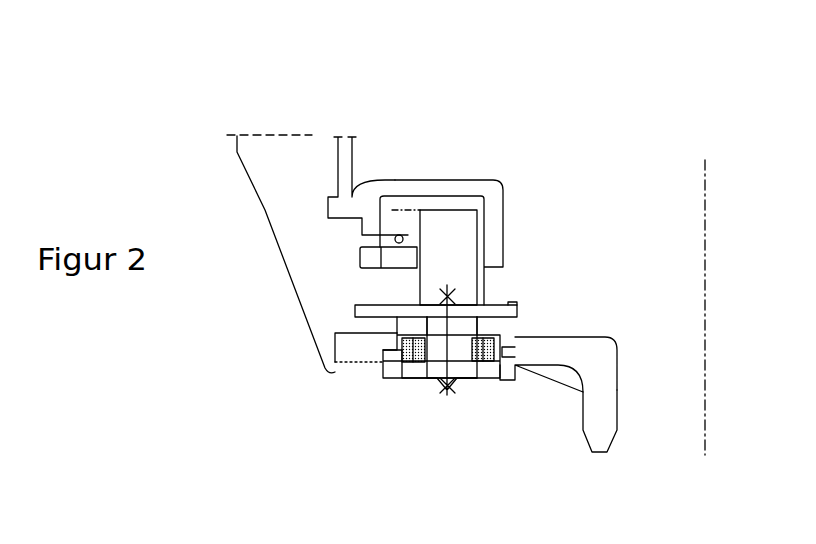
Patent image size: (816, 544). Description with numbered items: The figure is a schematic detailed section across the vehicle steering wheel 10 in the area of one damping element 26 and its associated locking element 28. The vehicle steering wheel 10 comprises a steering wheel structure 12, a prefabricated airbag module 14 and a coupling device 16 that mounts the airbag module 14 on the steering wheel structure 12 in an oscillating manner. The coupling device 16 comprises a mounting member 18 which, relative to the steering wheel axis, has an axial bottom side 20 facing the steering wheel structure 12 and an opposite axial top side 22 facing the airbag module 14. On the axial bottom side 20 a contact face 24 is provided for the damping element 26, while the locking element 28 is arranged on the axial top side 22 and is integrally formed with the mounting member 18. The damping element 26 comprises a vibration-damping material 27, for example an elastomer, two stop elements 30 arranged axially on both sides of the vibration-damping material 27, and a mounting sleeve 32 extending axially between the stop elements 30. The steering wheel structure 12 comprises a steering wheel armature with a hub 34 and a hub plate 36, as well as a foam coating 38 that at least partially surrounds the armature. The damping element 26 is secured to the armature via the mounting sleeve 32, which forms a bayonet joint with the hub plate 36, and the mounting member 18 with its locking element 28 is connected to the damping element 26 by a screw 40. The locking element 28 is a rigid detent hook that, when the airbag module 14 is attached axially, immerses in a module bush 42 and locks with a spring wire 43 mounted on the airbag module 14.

The vehicle steering wheel 10 is at (664, 106).
The steering wheel structure 12 is at (271, 326).
The prefabricated airbag module 14 is at (343, 175).
The coupling device 16 is at (560, 227).
The mounting member 18 is at (512, 303).
The axial bottom side 20 is at (368, 327).
The axial top side 22 is at (372, 304).
The contact face 24 is at (412, 322).
The damping element 26 is at (371, 388).
The vibration-damping material 27 is at (410, 385).
The locking element 28 is at (419, 218).
The stop elements 30 is at (495, 327).
The mounting sleeve 32 is at (392, 372).
The hub 34 is at (606, 396).
The hub plate 36 is at (538, 340).
The foam coating 38 is at (270, 214).
The screw 40 is at (447, 340).
The module bushes 42 is at (498, 226).
The spring wire 43 is at (399, 236).